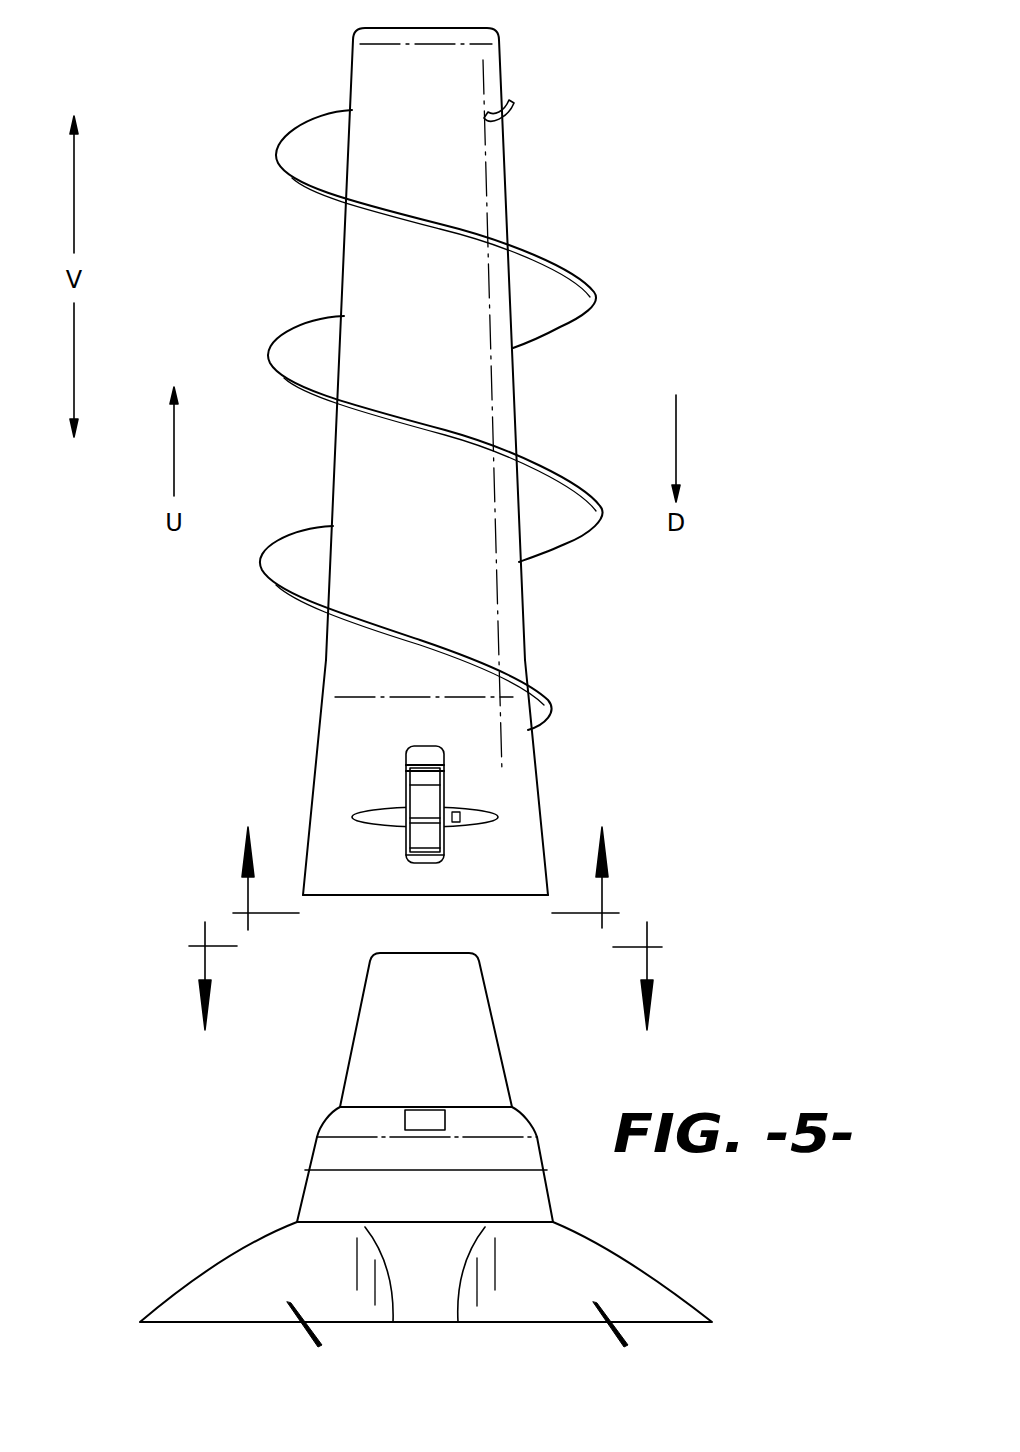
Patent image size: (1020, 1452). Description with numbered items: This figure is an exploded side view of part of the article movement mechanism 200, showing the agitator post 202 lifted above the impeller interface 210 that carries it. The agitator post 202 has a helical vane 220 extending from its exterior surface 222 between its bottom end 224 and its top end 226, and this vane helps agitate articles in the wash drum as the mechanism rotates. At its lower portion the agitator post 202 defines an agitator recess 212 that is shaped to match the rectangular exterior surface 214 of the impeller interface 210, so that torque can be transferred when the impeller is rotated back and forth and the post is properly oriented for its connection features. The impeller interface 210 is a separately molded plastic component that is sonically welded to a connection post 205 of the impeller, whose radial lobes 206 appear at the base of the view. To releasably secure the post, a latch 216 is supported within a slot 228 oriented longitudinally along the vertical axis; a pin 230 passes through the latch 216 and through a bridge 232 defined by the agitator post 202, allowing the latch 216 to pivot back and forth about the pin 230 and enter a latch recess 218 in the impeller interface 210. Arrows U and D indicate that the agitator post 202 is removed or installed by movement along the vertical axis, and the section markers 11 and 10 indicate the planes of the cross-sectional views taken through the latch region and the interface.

The article movement mechanism 200 is at (642, 164).
The agitator post 202 is at (367, 71).
The connection post 205 is at (537, 1207).
The radial lobe 206 is at (618, 1276).
The impeller interface 210 is at (405, 1051).
The agitator recess 212 is at (366, 909).
The exterior surface 214 is at (346, 1057).
The latch 216 is at (434, 800).
The latch recess 218 is at (435, 1122).
The helical vane 220 is at (553, 533).
The exterior surface 222 is at (335, 287).
The bottom end 224 is at (554, 808).
The top end 226 is at (525, 58).
The slot 228 is at (388, 757).
The pin 230 is at (378, 815).
The bridge 232 is at (451, 830).
The section line 11- 11 is at (424, 872).
The section line 10- 10 is at (425, 980).